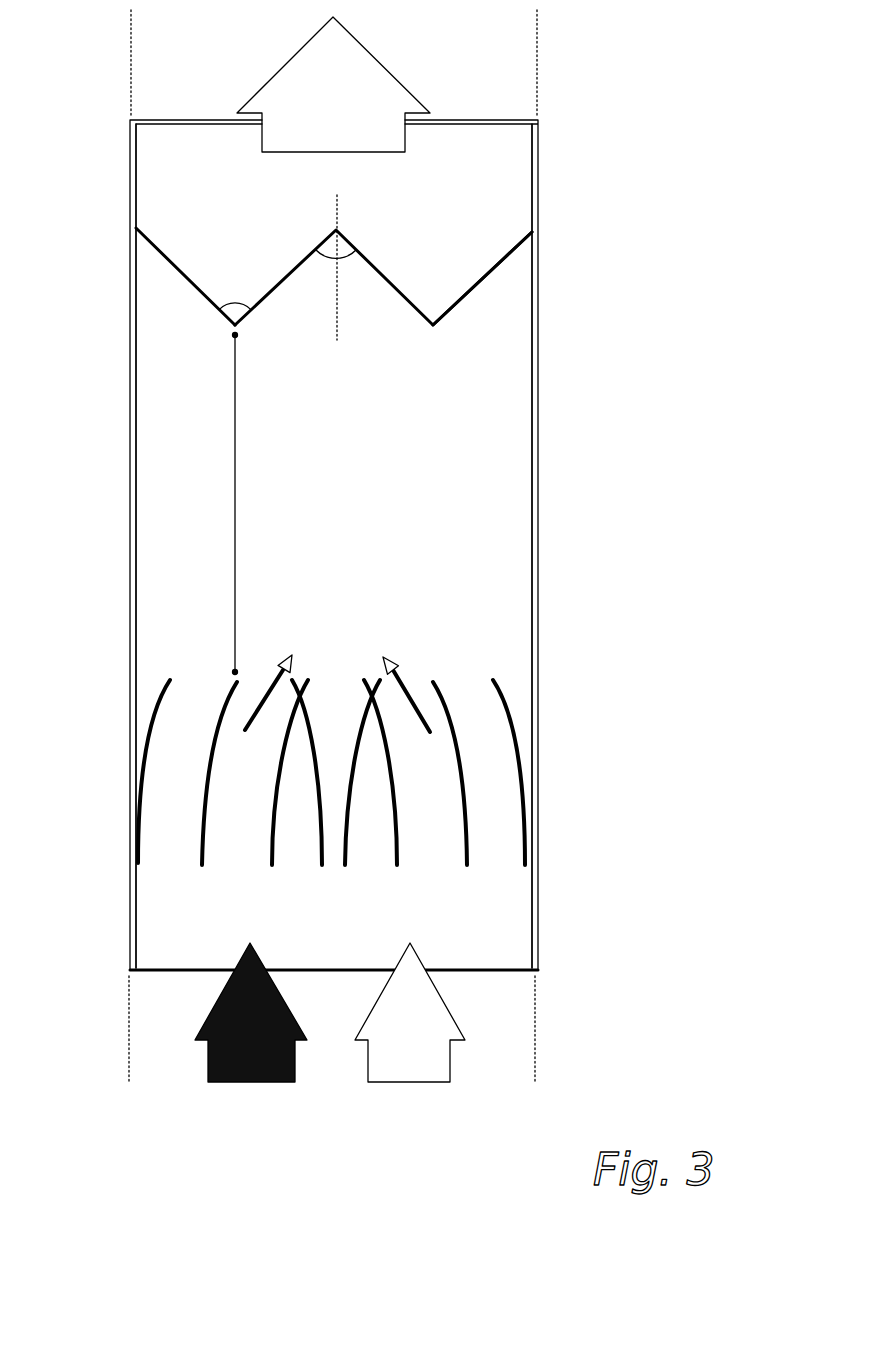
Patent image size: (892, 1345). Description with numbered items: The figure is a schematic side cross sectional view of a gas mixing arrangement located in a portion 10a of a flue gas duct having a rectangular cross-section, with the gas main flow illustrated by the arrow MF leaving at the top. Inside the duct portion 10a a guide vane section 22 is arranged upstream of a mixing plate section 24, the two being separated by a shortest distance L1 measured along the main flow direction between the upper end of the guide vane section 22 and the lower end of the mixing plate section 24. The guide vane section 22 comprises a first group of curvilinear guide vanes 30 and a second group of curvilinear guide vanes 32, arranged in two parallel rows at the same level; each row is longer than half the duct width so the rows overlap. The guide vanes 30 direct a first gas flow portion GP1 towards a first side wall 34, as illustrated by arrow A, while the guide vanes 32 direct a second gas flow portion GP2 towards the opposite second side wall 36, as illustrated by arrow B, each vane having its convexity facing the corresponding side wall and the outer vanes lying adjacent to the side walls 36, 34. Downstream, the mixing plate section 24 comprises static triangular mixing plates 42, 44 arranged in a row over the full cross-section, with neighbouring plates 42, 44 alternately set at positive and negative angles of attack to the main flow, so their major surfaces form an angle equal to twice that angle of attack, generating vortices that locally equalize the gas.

The gas duct portion 10a is at (538, 637).
The guide vane section 22 is at (183, 637).
The mixing plate section 24 is at (216, 347).
The guide vanes 30 is at (202, 865).
The guide vanes 32 is at (397, 865).
The first side wall 34 is at (538, 687).
The second side wall 36 is at (130, 320).
The mixing plate 42 is at (392, 284).
The mixing plate 44 is at (487, 274).
The main flow arrow MF is at (407, 132).
The first gas flow portion GP1 is at (247, 1083).
The second gas flow portion GP2 is at (410, 1083).
The arrow A is at (267, 667).
The arrow B is at (397, 667).
The shortest distance L1 is at (252, 504).